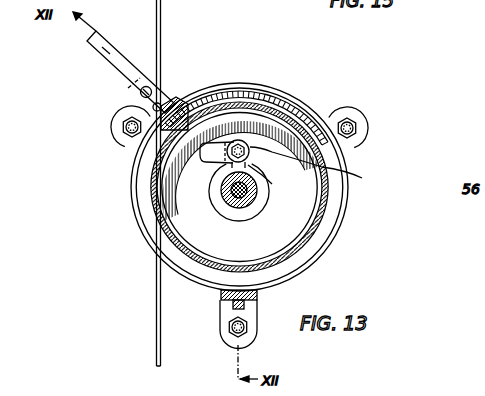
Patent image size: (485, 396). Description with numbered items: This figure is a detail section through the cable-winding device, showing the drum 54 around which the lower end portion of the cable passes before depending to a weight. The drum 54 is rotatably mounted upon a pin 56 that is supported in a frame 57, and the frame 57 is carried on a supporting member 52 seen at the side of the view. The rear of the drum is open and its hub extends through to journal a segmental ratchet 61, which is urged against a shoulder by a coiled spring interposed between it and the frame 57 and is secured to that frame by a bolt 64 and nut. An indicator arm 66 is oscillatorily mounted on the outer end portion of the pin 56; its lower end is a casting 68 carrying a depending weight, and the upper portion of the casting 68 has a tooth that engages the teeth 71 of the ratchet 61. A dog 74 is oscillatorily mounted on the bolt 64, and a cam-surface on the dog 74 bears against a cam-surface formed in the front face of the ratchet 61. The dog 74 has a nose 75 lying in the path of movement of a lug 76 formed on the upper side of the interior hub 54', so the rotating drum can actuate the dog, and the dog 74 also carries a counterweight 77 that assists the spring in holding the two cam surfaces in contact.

The housing ring / frame 52 is at (160, 11).
The drum 54 is at (270, 187).
The interior hub 54' is at (251, 204).
The pin 56 is at (233, 219).
The frame 57 is at (352, 143).
The segmental ratchet 61 is at (267, 95).
The bolt 64 is at (248, 140).
The indicator arm 66 is at (112, 70).
The casting 68 is at (174, 100).
The teeth 71 is at (226, 92).
The dog 74 is at (315, 167).
The nose 75 is at (322, 140).
The lug 76 is at (214, 192).
The counterweight 77 is at (178, 150).